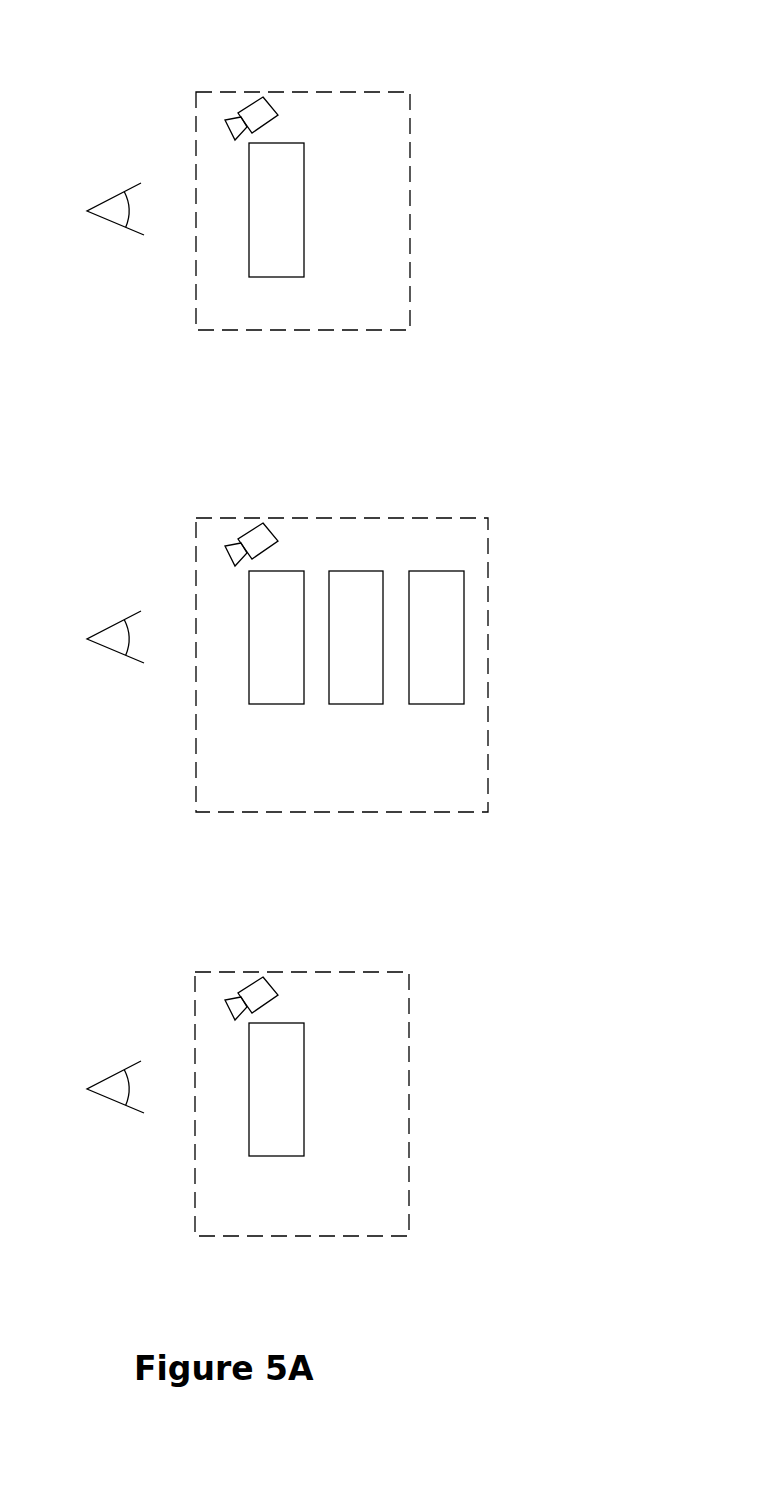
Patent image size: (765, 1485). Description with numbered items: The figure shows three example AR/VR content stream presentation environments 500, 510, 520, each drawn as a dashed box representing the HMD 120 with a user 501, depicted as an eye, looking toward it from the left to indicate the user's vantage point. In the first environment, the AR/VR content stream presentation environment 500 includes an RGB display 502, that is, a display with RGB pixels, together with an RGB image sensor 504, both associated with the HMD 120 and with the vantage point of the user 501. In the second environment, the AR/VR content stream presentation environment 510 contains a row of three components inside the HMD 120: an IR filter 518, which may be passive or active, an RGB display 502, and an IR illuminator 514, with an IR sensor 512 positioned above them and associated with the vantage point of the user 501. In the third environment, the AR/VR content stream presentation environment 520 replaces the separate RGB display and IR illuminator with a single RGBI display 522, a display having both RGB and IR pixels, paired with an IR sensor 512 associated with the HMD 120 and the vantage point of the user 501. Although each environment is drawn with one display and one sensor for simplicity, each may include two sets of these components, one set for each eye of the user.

The AR/VR content stream presentation environment 500 is at (147, 42).
The AR/VR content stream presentation environment 510 is at (147, 450).
The AR/VR content stream presentation environment 520 is at (147, 926).
The user 501 is at (110, 643).
The HMD 120 is at (410, 179).
The RGB image sensor 504 is at (302, 117).
The RGB display 502 is at (297, 459).
The IR sensor 512 is at (313, 771).
The IR filter 518 is at (277, 662).
The IR illuminator 514 is at (437, 673).
The RGBI display 522 is at (274, 1116).